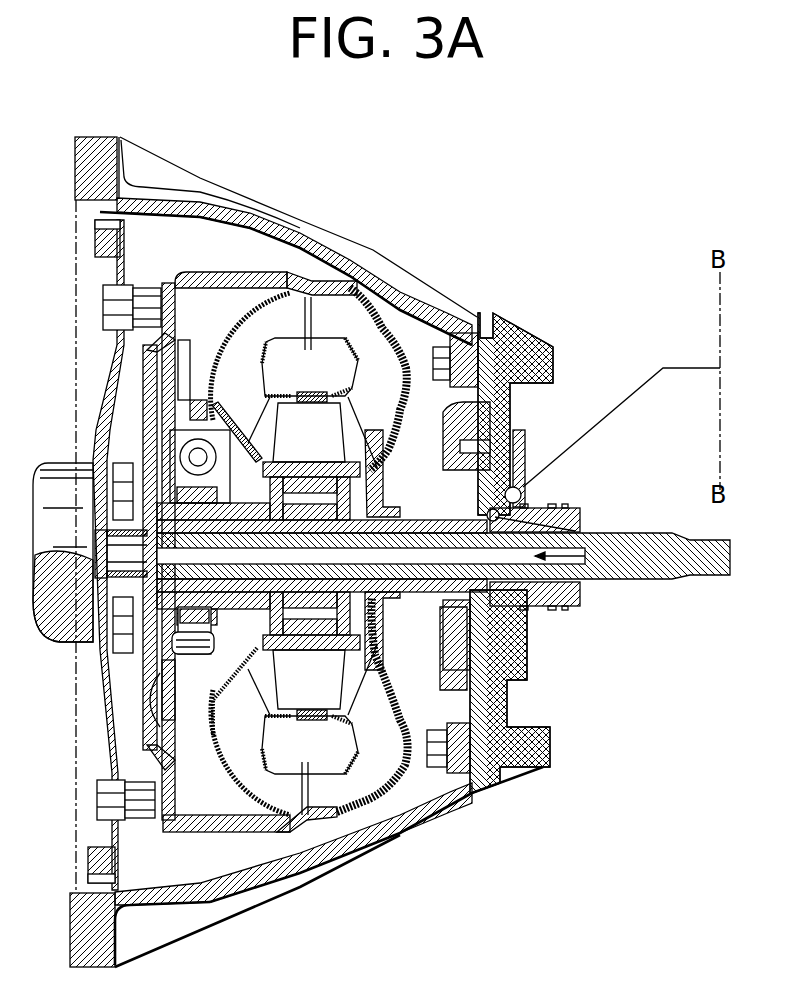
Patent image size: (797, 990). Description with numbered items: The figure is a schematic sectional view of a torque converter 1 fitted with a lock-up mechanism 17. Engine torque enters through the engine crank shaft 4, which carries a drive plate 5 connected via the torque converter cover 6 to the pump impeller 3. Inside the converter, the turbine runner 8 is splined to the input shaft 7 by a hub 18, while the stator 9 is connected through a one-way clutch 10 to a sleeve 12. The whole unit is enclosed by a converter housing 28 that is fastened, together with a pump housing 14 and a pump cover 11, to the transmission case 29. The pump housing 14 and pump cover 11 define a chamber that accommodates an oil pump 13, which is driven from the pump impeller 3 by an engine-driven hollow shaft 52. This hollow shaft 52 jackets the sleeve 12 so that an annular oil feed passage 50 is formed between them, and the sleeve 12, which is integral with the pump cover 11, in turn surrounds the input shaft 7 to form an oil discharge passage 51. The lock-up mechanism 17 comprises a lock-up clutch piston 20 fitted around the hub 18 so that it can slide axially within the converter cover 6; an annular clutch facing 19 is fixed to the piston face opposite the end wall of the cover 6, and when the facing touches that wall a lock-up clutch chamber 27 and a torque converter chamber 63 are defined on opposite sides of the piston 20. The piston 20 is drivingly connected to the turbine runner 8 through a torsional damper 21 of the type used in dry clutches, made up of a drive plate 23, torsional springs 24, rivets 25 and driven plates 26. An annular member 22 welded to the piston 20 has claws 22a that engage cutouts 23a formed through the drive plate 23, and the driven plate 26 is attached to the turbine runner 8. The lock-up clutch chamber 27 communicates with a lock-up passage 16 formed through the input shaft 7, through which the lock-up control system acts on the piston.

The torque converter 1 is at (304, 274).
The pump impeller 3 is at (364, 313).
The engine crank shaft 4 is at (60, 468).
The drive plate 5 is at (105, 372).
The torque converter cover 6 is at (143, 702).
The input shaft 7 is at (700, 583).
The turbine runner 8 is at (270, 318).
The stator 9 is at (350, 392).
The one-way clutch 10 is at (318, 468).
The pump cover 11 is at (505, 412).
The sleeve 12 is at (400, 600).
The oil pump 13 is at (520, 482).
The pump housing 14 is at (500, 695).
The lock-up passage 16 is at (583, 592).
The lock-up mechanism 17 is at (140, 345).
The hub 18 is at (212, 515).
The clutch facing 19 is at (102, 306).
The lock-up clutch piston 20 is at (180, 418).
The torsional damper 21 is at (180, 480).
The annular member 22 is at (190, 375).
The claws 22a is at (218, 408).
The drive plate 23 is at (185, 430).
The cutouts 23a is at (262, 722).
The torsional springs 24 is at (250, 440).
The rivets 25 is at (173, 653).
The driven plates 26 is at (250, 690).
The lock-up clutch chamber 27 is at (157, 676).
The converter housing 28 is at (395, 838).
The transmission case 29 is at (530, 768).
The oil feed passage 50 is at (418, 432).
The oil discharge passage 51 is at (522, 600).
The hollow shaft 52 is at (428, 475).
The torque converter chamber 63 is at (230, 290).